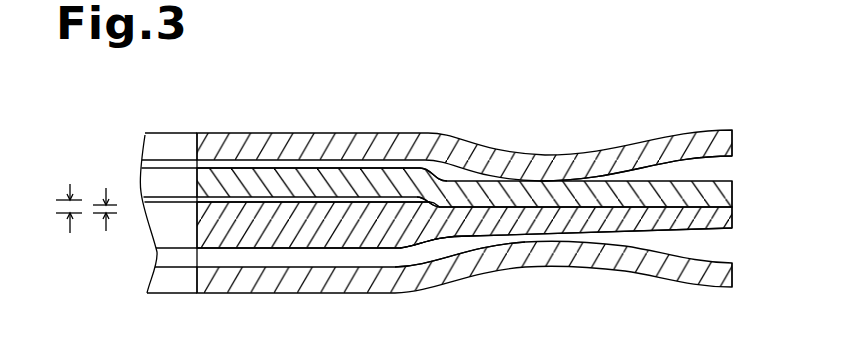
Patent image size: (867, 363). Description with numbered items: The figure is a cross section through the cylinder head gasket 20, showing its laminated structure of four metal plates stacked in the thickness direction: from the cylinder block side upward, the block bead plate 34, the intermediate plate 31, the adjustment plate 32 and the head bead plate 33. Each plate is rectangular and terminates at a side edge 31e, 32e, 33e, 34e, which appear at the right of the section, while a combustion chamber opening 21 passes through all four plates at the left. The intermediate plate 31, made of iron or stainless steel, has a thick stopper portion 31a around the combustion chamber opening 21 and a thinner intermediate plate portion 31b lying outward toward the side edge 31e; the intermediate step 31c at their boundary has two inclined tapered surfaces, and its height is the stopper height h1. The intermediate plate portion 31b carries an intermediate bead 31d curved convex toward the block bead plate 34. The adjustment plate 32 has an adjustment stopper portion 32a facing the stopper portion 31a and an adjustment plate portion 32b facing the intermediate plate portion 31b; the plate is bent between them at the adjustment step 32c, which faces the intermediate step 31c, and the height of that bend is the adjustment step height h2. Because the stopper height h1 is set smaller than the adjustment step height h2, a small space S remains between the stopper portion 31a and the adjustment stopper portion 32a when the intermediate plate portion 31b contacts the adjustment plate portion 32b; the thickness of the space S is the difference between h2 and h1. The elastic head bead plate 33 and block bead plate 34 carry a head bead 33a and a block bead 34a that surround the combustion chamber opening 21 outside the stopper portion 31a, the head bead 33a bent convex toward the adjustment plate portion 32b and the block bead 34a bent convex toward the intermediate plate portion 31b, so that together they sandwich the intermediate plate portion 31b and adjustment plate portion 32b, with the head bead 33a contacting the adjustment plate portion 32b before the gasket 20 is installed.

The cylinder head gasket 20 is at (735, 124).
The combustion chamber opening 21 is at (196, 151).
The intermediate plate 31 is at (733, 213).
The stopper portion 31a is at (227, 250).
The intermediate plate portion 31b is at (440, 238).
The intermediate step 31c is at (413, 240).
The intermediate bead 31d is at (613, 238).
The side edge of intermediate plate 31e is at (733, 223).
The adjustment plate 32 is at (795, 190).
The adjustment stopper portion 32a is at (267, 170).
The adjustment plate portion 32b is at (472, 181).
The adjustment step 32c is at (418, 204).
The side edge of adjustment plate 32e is at (733, 193).
The head bead plate 33 is at (795, 140).
The head bead 33a is at (660, 172).
The side edge of head bead plate 33e is at (733, 148).
The block bead plate 34 is at (795, 283).
The block bead 34a is at (488, 248).
The side edge of block bead plate 34e is at (733, 280).
The space S is at (293, 203).
The stopper height h1 is at (116, 207).
The adjustment step height h2 is at (60, 206).